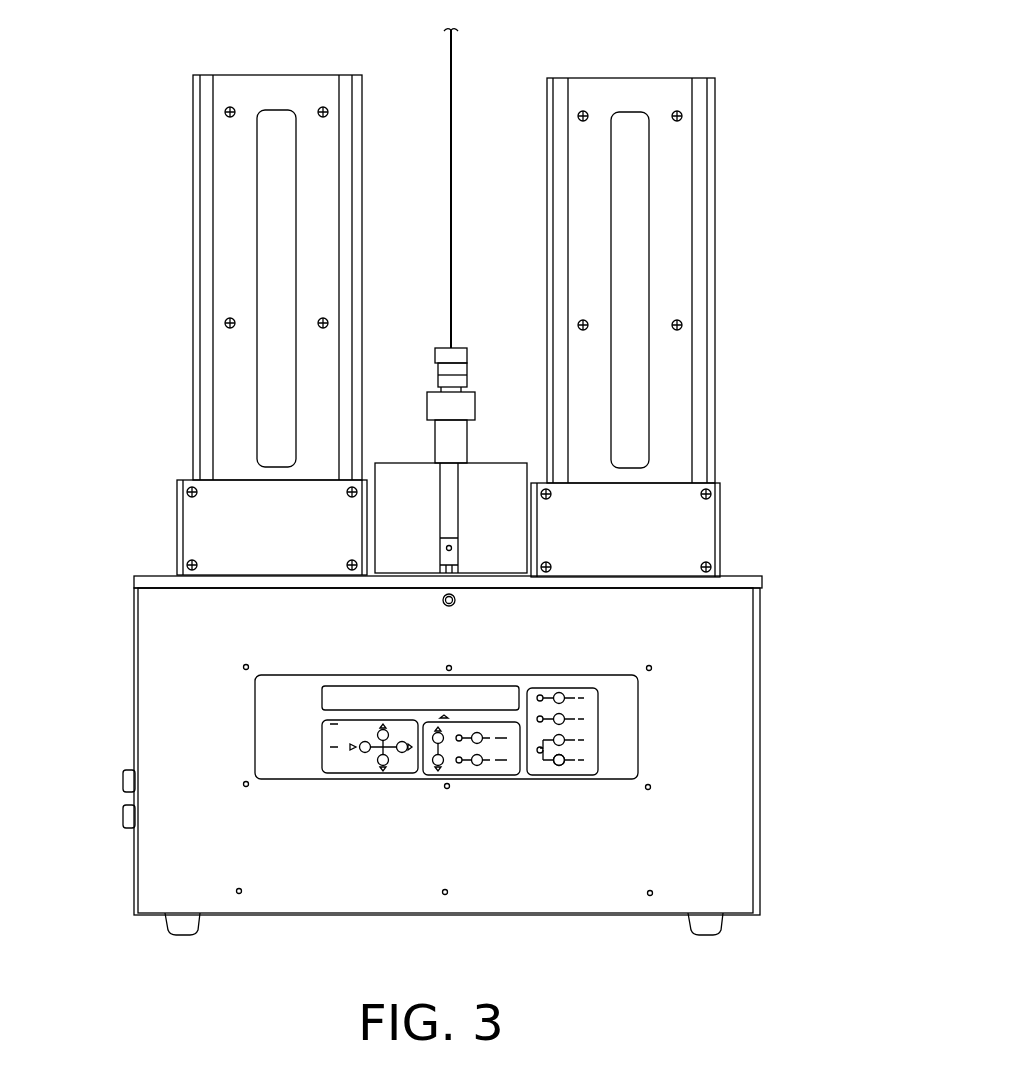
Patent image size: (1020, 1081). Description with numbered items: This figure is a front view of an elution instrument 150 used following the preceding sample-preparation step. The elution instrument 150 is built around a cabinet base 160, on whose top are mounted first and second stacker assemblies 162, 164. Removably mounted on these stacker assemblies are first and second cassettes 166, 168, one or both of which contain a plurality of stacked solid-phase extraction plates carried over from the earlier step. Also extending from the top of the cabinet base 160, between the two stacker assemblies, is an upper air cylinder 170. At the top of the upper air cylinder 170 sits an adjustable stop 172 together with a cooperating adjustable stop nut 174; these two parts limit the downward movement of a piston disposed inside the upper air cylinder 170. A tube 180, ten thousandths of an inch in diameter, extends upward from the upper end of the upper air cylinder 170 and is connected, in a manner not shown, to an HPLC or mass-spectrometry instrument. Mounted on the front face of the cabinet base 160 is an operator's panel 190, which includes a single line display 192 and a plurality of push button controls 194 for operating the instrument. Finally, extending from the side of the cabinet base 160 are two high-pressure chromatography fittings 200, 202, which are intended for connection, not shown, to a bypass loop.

The elution instrument 150 is at (782, 161).
The cabinet base 160 is at (700, 830).
The first stacker assembly 162 is at (212, 526).
The second stacker assembly 164 is at (688, 528).
The first cassette 166 is at (232, 240).
The second cassette 168 is at (673, 240).
The upper air cylinder 170 is at (403, 482).
The adjustable stop 172 is at (468, 407).
The adjustable stop nut 174 is at (440, 383).
The tube 180 is at (458, 72).
The operator's panel 190 is at (288, 692).
The single line display 192 is at (471, 697).
The push button controls 194 is at (555, 766).
The high-pressure chromatography fitting 200 is at (125, 780).
The high-pressure chromatography fitting 202 is at (125, 816).